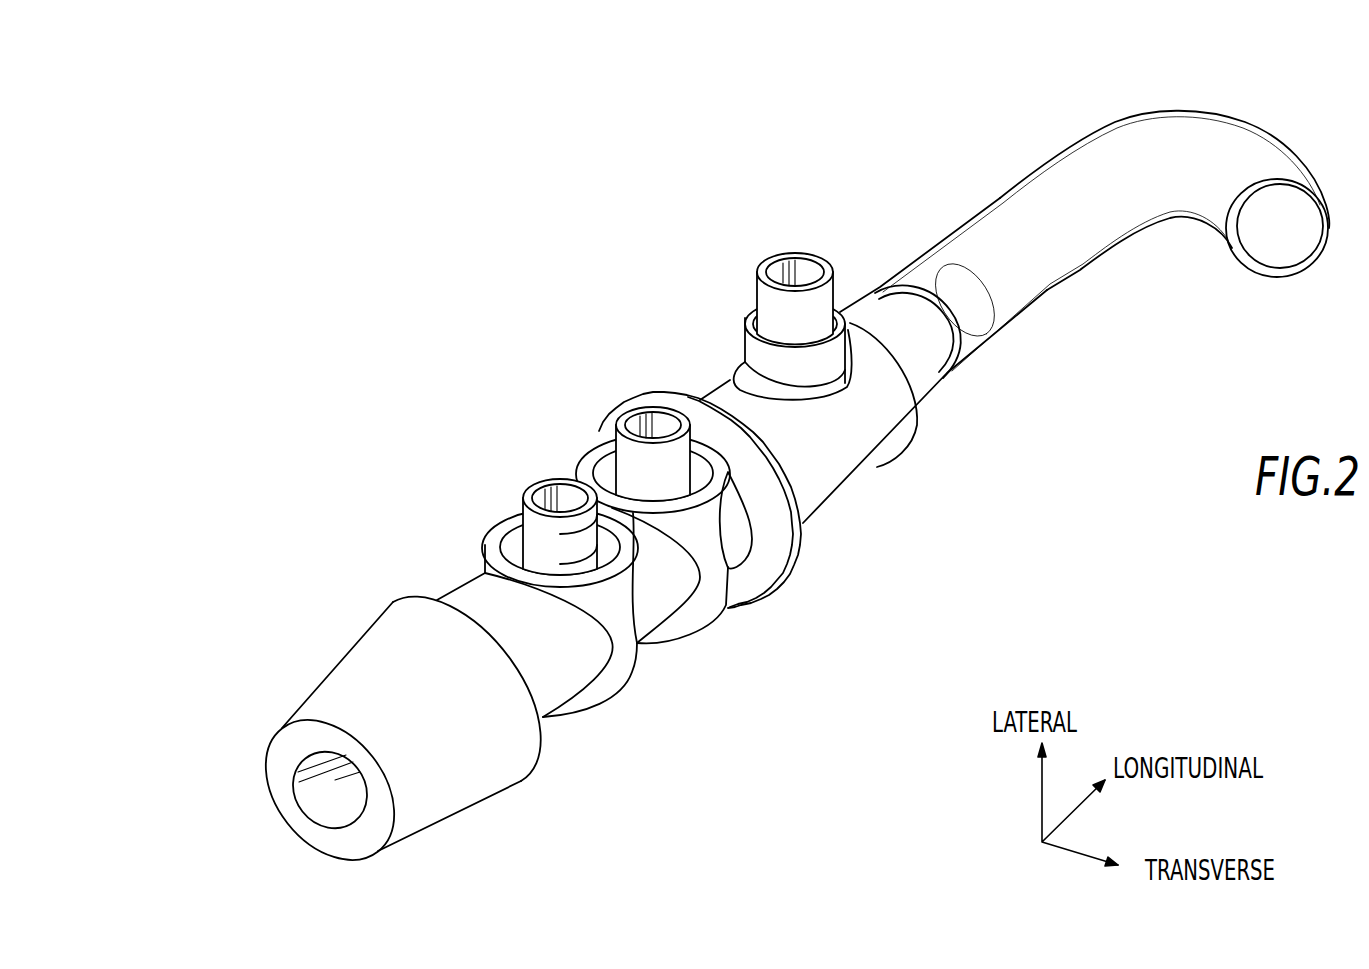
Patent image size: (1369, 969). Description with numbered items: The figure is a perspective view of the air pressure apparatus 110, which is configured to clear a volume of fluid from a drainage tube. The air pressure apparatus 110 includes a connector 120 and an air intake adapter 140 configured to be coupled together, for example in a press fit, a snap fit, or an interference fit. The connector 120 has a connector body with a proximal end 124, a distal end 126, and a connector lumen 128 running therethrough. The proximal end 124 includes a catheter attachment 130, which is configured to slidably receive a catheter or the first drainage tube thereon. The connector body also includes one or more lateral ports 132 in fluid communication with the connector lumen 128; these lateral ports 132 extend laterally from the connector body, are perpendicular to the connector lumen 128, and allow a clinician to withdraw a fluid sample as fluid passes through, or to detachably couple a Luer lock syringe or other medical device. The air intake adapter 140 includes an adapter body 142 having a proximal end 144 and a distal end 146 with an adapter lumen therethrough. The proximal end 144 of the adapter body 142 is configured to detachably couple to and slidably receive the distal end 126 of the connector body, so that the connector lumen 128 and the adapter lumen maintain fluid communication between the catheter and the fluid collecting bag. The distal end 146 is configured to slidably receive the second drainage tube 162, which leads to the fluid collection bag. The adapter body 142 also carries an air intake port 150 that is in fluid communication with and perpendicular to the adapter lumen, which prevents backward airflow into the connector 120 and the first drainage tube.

The air pressure apparatus 110 is at (497, 250).
The connector 120 is at (380, 557).
The proximal end 124 is at (520, 810).
The distal end 126 is at (803, 595).
The connector lumen 128 is at (325, 783).
The catheter attachment 130 is at (368, 690).
The lateral ports 132 is at (560, 500).
The air intake adapter 140 is at (870, 213).
The adapter body 142 is at (840, 448).
The proximal end 144 is at (843, 540).
The distal end 146 is at (990, 338).
The air intake port 150 is at (795, 273).
The second drainage tube 162 is at (1115, 153).